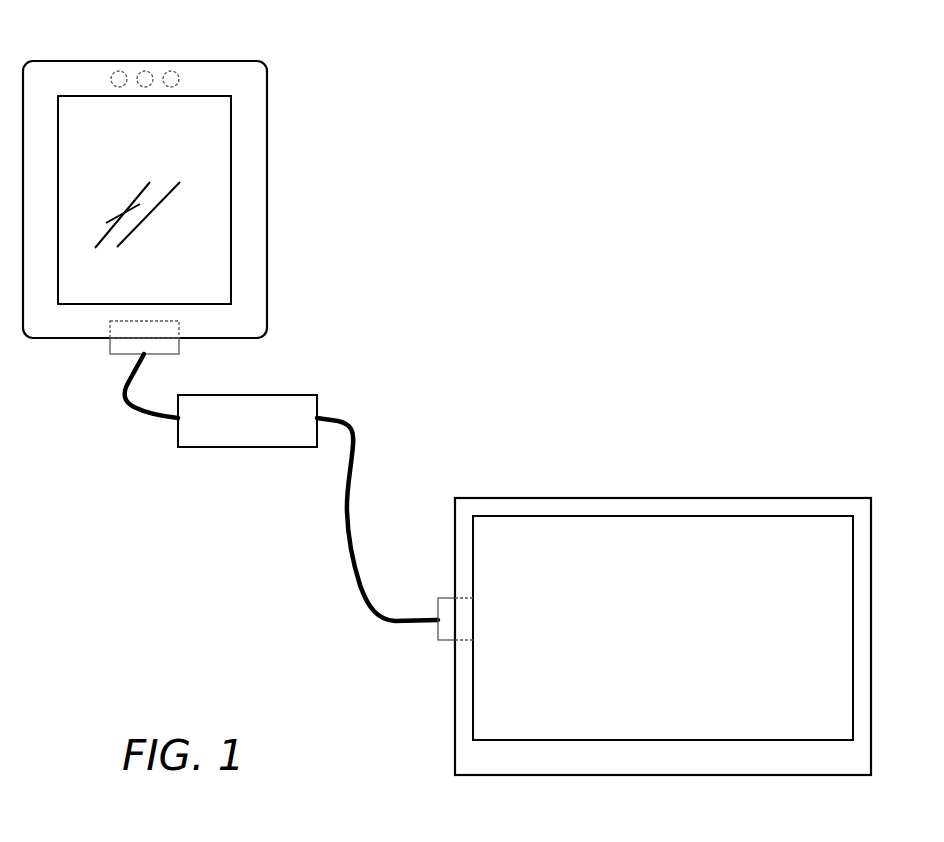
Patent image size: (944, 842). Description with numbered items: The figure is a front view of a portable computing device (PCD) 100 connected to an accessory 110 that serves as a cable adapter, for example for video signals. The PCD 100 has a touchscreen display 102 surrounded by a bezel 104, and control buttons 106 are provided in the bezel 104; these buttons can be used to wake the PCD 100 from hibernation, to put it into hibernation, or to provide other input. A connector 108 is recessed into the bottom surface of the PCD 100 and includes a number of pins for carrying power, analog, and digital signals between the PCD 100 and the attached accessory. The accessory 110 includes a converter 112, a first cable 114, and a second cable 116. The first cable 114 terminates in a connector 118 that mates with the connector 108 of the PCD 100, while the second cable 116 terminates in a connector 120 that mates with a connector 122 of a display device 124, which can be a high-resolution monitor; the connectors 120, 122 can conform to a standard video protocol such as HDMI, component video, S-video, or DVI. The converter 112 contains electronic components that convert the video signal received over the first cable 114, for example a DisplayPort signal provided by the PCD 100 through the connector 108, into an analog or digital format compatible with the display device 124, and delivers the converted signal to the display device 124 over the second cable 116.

The portable computing device 100 is at (300, 92).
The touchscreen display 102 is at (142, 154).
The bezel 104 is at (267, 168).
The control buttons 106 is at (167, 72).
The connector 108 is at (118, 320).
The accessory 110 is at (248, 498).
The converter 112 is at (283, 393).
The first cable 114 is at (135, 407).
The second cable 116 is at (355, 465).
The connector 118 is at (109, 355).
The connector 120 is at (438, 630).
The connector 122 is at (463, 597).
The display device 124 is at (715, 497).